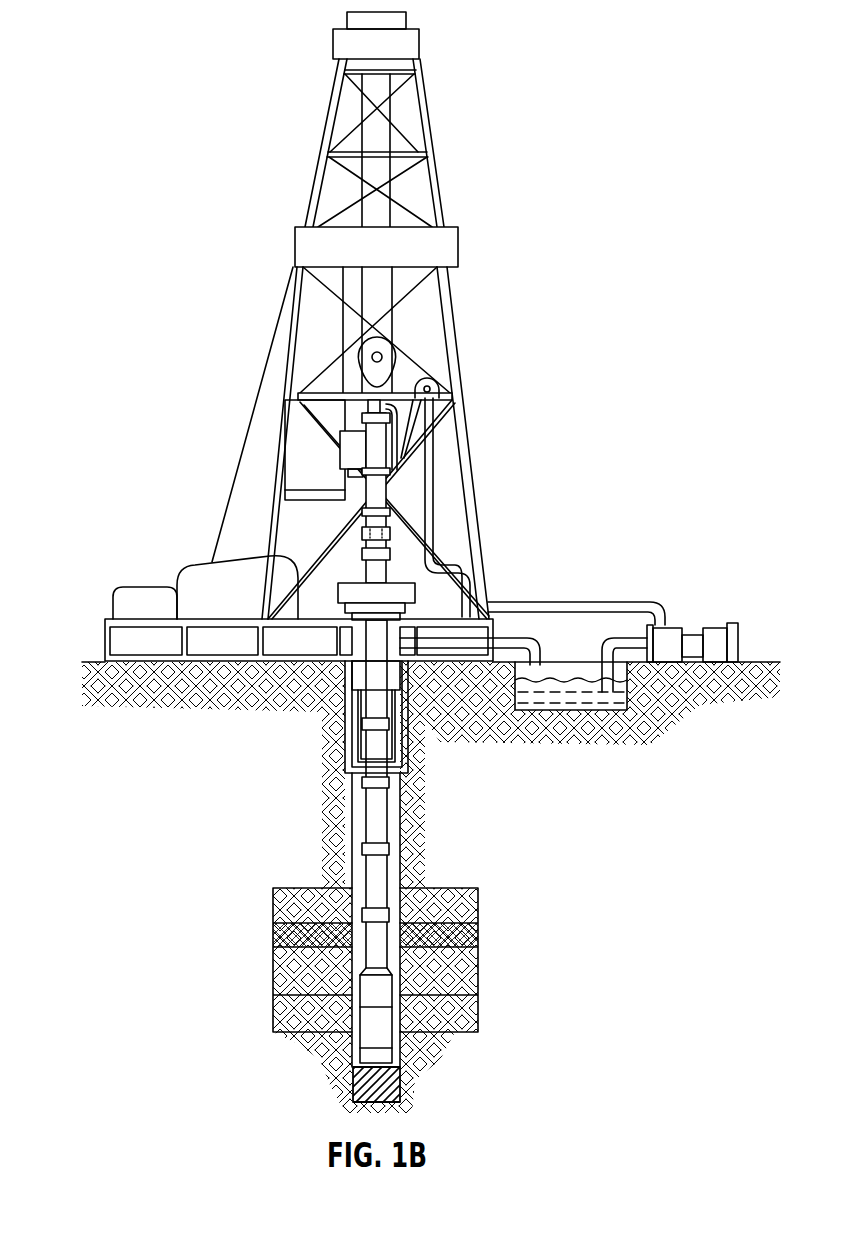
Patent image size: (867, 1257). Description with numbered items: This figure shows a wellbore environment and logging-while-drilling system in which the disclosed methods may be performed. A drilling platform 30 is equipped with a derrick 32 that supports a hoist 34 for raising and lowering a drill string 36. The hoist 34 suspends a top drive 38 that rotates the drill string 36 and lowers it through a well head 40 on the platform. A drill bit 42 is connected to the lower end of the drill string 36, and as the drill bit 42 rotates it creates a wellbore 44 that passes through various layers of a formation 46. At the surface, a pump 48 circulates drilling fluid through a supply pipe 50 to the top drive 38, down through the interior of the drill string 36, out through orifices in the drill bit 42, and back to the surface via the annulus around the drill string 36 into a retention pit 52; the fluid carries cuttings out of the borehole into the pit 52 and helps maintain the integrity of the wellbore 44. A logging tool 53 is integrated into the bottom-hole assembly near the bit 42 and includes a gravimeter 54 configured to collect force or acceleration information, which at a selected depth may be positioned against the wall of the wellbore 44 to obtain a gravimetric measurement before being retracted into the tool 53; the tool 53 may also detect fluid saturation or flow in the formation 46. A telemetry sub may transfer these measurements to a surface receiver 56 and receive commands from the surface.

The drilling platform 30 is at (105, 640).
The derrick 32 is at (427, 129).
The hoist 34 is at (387, 358).
The drill string 36 is at (375, 813).
The top drive 38 is at (372, 458).
The well head 40 is at (397, 583).
The drill bit 42 is at (402, 1078).
The wellbore 44 is at (400, 840).
The formation 46 is at (510, 888).
The pump 48 is at (672, 630).
The supply pipe 50 is at (627, 602).
The retention pit 52 is at (595, 703).
The logging tool 53 is at (375, 995).
The gravimeter 54 is at (372, 1033).
The surface receiver 56 is at (389, 533).